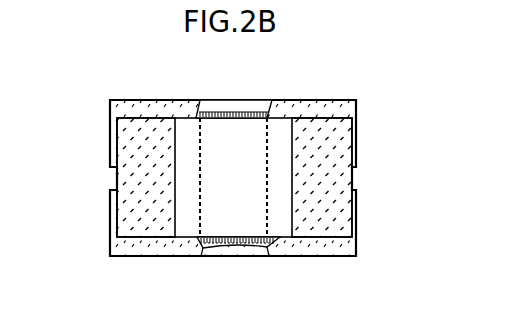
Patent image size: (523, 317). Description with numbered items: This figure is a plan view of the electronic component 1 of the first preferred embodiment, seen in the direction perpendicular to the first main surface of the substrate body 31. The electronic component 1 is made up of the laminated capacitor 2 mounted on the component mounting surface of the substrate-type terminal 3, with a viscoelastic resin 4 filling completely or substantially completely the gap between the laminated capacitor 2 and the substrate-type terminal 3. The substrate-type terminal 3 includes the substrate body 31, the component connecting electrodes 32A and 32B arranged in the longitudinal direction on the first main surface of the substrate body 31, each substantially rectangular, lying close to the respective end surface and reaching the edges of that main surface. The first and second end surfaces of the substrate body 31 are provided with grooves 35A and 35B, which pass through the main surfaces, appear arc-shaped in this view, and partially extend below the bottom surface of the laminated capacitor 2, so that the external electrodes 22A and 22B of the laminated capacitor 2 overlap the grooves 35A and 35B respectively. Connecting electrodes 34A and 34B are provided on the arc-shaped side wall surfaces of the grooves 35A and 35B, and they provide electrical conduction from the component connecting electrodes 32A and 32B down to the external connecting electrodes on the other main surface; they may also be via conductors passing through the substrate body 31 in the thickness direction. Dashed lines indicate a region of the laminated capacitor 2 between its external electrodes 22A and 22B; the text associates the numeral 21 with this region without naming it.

The electronic component 1 is at (253, 185).
The laminated capacitor 2 is at (357, 117).
The substrate-type terminal 3 is at (109, 256).
The viscoelastic resin 4 is at (221, 109).
The dielectric layer 21 is at (277, 130).
The external electrode 22A is at (137, 113).
The external electrode 22B is at (308, 127).
The substrate body 31 is at (206, 252).
The component connecting electrode 32A is at (158, 250).
The component connecting electrode 32B is at (314, 252).
The connecting electrode 34A is at (112, 190).
The connecting electrode 34B is at (357, 190).
The groove 35A is at (96, 185).
The groove 35B is at (371, 187).